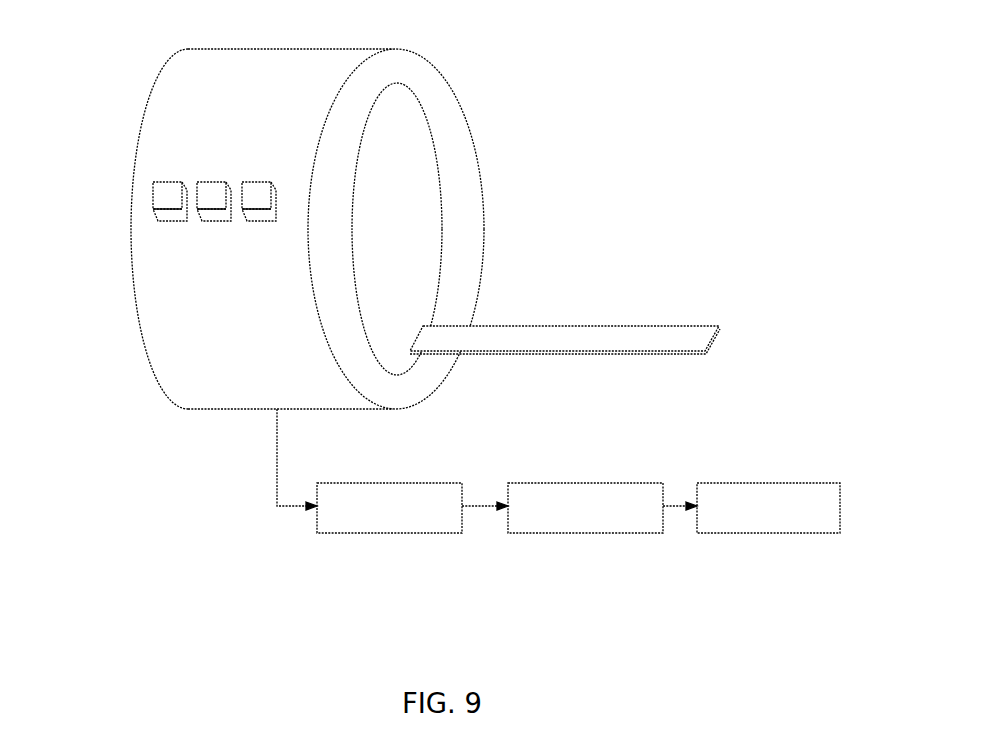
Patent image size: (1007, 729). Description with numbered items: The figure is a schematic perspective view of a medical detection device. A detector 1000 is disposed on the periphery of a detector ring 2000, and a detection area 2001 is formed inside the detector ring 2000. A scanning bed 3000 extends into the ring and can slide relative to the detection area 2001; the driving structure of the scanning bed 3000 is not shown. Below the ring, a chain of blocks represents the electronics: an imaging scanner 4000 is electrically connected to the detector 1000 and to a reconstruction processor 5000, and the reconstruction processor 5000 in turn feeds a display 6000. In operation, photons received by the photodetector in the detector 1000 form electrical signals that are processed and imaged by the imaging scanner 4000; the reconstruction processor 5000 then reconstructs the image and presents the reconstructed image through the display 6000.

The detector 1000 is at (170, 198).
The detector ring 2000 is at (170, 113).
The detection area 2001 is at (413, 155).
The scanning bed 3000 is at (580, 338).
The imaging scanner 4000 is at (395, 533).
The reconstruction processor 5000 is at (570, 533).
The display 6000 is at (755, 533).